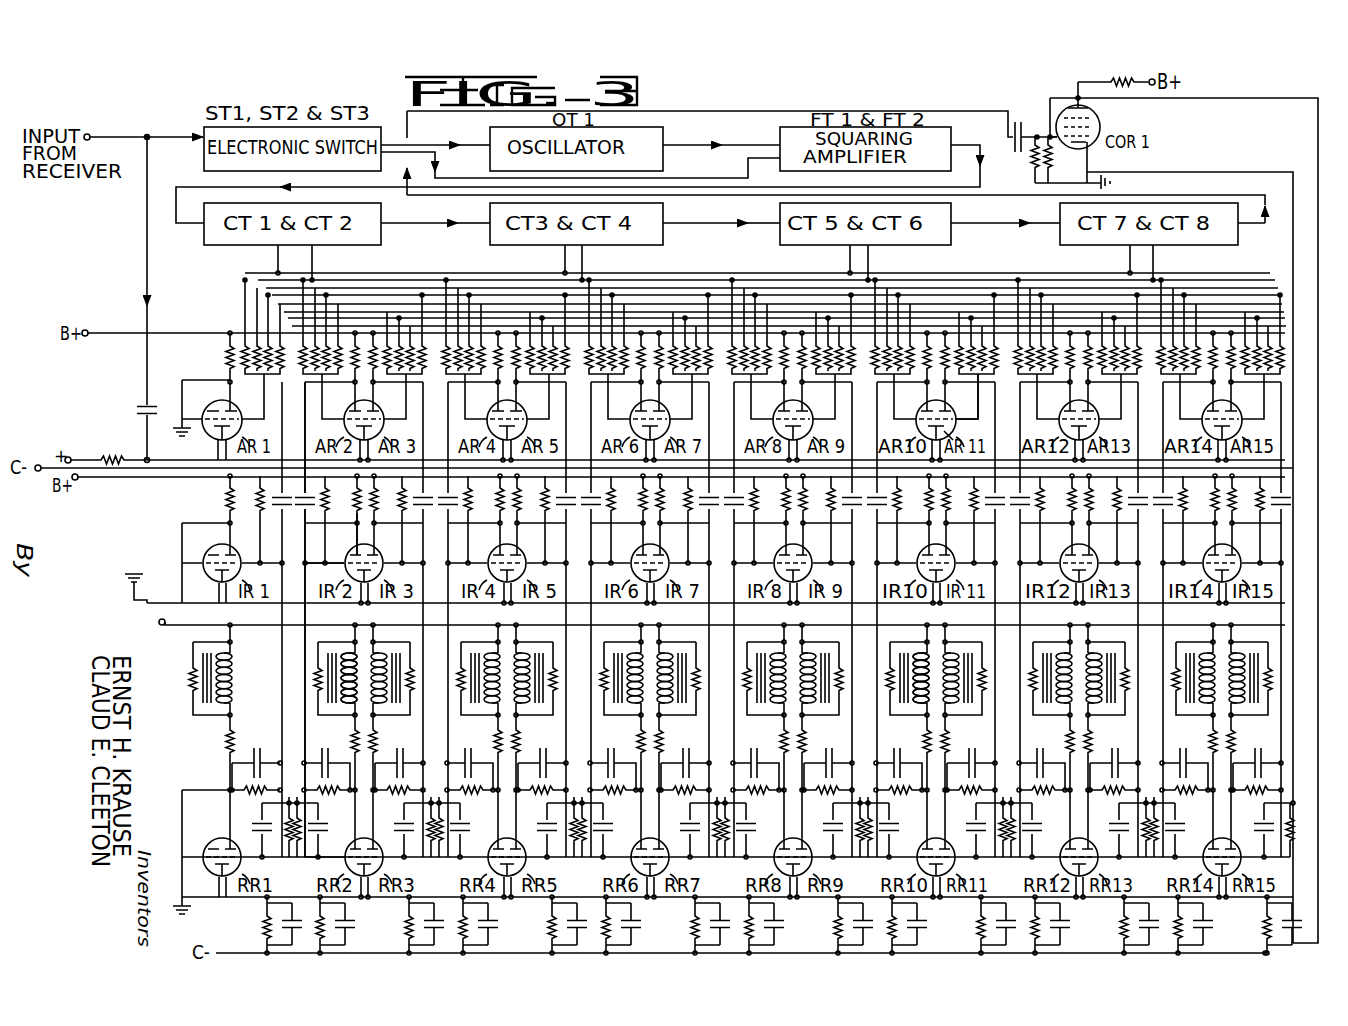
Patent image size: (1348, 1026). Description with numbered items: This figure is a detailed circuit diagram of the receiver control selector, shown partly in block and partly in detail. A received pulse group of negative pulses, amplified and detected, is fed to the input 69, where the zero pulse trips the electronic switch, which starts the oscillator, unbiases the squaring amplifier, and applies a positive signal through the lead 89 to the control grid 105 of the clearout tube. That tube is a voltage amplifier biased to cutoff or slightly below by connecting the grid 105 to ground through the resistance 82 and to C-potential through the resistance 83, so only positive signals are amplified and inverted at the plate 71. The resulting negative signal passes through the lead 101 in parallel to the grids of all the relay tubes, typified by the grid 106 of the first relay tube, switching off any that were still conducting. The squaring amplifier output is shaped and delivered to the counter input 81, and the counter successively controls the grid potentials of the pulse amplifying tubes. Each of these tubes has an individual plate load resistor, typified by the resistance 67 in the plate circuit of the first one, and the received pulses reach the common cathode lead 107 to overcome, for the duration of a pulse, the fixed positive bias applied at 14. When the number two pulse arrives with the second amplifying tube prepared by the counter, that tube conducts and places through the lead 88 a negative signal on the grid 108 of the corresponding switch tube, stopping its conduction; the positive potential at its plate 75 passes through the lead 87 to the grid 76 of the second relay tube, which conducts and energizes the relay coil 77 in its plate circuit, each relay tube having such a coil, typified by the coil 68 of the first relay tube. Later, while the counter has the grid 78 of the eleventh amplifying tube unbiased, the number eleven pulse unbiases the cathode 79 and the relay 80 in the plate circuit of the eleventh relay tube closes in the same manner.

The input 69 is at (110, 139).
The lead 89 is at (741, 111).
The resistance 83 is at (1032, 132).
The plate 71 is at (1086, 108).
The resistance 82 is at (1029, 157).
The grid 105 is at (1063, 160).
The counter input 81 is at (186, 223).
The resistance 67 is at (228, 354).
The lead 88 is at (304, 434).
The common cathode lead 107 is at (182, 436).
The fixed positive bias point 14 is at (94, 460).
The grid 78 is at (970, 413).
The cathode 79 is at (956, 437).
The plate 75 is at (355, 555).
The grid 108 is at (343, 567).
The lead 87 is at (299, 632).
The relay coil 68 is at (227, 694).
The relay coil 77 is at (351, 694).
The relay 80 is at (923, 679).
The grid 106 is at (262, 846).
The grid 76 is at (337, 858).
The lead 101 is at (1318, 630).